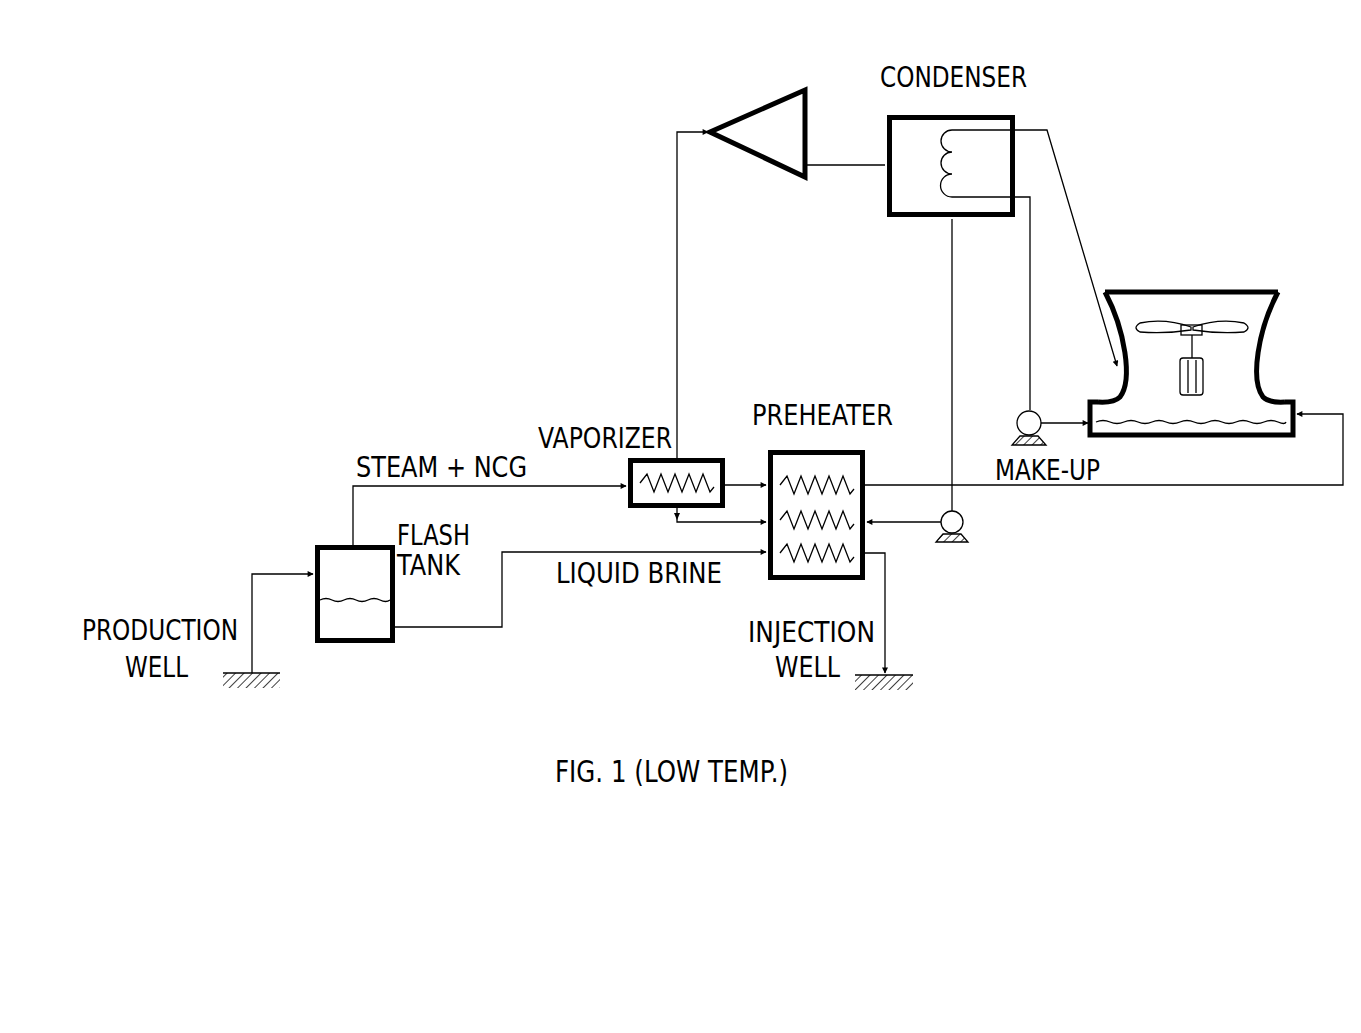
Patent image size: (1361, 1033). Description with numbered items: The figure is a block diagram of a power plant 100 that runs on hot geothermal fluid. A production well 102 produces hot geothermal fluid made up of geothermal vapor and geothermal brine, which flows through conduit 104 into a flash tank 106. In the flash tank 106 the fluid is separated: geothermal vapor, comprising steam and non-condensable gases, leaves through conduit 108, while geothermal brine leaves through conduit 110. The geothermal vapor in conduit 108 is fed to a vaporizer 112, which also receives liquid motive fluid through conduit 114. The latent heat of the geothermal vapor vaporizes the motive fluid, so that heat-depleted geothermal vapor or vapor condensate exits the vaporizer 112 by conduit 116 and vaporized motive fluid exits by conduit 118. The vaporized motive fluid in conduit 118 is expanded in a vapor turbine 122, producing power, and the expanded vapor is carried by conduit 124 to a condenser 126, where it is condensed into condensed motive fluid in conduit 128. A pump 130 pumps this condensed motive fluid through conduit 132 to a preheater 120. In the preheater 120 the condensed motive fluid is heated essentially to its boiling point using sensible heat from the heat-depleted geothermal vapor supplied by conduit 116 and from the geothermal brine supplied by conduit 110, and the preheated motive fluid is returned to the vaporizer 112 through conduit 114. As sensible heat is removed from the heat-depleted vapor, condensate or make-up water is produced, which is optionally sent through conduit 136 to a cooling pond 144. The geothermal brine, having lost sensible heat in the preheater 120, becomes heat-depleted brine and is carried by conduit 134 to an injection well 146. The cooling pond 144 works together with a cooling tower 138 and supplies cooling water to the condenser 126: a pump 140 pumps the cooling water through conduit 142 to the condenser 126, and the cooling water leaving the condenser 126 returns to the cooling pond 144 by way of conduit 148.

The power plant 100 is at (226, 78).
The production well 102 is at (250, 675).
The conduit 104 is at (253, 605).
The flash tank 106 is at (390, 645).
The conduit 108 is at (352, 518).
The conduit 110 is at (606, 553).
The vaporizer 112 is at (630, 508).
The conduit 114 is at (714, 528).
The conduit 116 is at (731, 482).
The conduit 118 is at (678, 283).
The preheater 120 is at (860, 452).
The vapor turbine 122 is at (727, 125).
The conduit 124 is at (818, 164).
The condenser 126 is at (1012, 115).
The conduit 128 is at (953, 284).
The pump 130 is at (962, 518).
The conduit 132 is at (905, 522).
The conduit 134 is at (886, 632).
The conduit 136 is at (1170, 490).
The cooling tower 138 is at (1268, 333).
The pump 140 is at (1015, 423).
The conduit 142 is at (1032, 332).
The cooling pond 144 is at (1175, 437).
The injection well 146 is at (896, 677).
The conduit 148 is at (1075, 216).